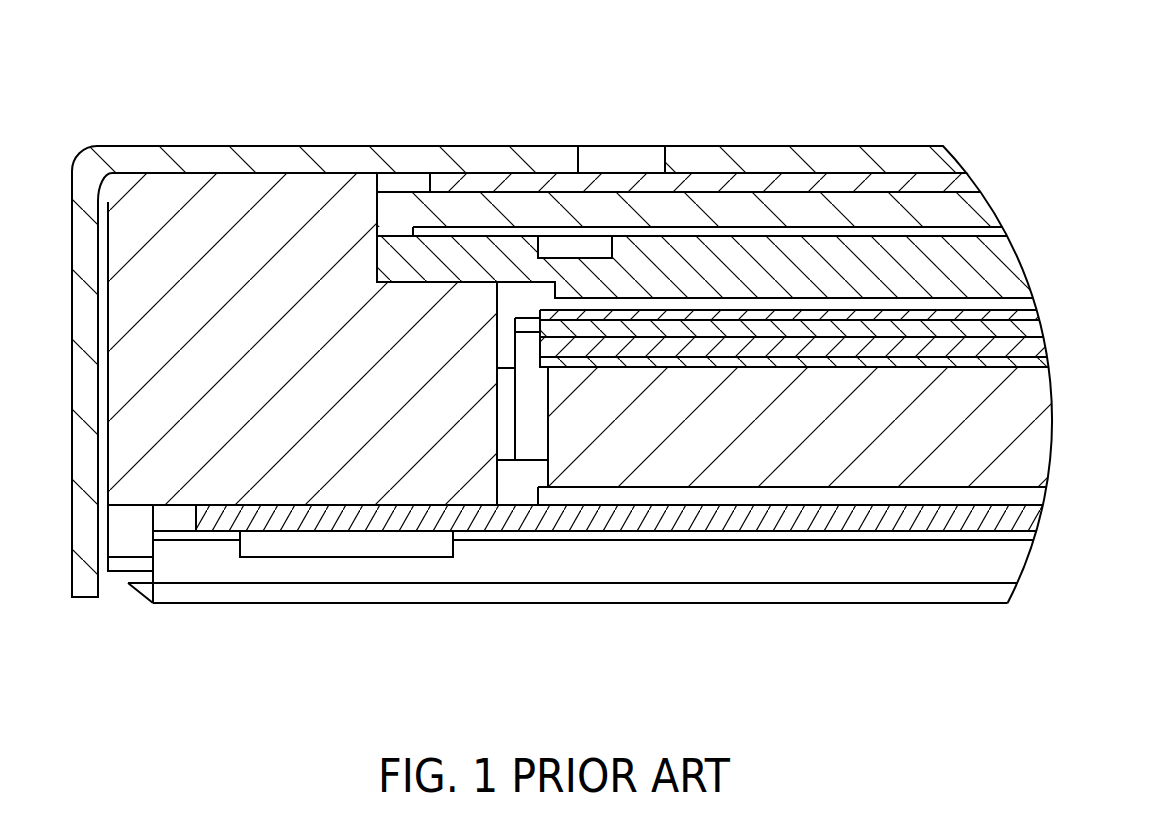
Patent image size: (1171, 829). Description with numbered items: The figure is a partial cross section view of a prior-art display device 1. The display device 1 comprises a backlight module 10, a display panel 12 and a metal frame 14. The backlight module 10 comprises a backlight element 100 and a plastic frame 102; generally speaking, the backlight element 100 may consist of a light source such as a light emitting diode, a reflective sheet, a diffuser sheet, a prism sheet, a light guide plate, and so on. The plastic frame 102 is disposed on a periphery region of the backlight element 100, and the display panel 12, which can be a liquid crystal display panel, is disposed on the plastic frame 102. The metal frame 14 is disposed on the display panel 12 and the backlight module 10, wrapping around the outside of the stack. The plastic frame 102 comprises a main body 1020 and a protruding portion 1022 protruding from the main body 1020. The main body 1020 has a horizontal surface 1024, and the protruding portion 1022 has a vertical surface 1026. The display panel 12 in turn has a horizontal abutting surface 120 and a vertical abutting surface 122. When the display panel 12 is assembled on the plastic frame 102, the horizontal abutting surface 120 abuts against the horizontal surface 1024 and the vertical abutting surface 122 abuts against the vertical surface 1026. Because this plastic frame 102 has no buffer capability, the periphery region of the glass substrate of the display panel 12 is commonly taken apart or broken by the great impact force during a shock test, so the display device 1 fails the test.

The display device 1 is at (1017, 100).
The backlight module 10 is at (887, 625).
The backlight element 100 is at (1057, 310).
The plastic frame 102 is at (380, 658).
The main body 1020 is at (203, 440).
The protruding portion 1022 is at (327, 240).
The horizontal surface 1024 is at (477, 290).
The vertical surface 1026 is at (377, 227).
The display panel 12 is at (1057, 170).
The horizontal abutting surface 120 is at (477, 290).
The vertical abutting surface 122 is at (380, 258).
The metal frame 14 is at (208, 147).